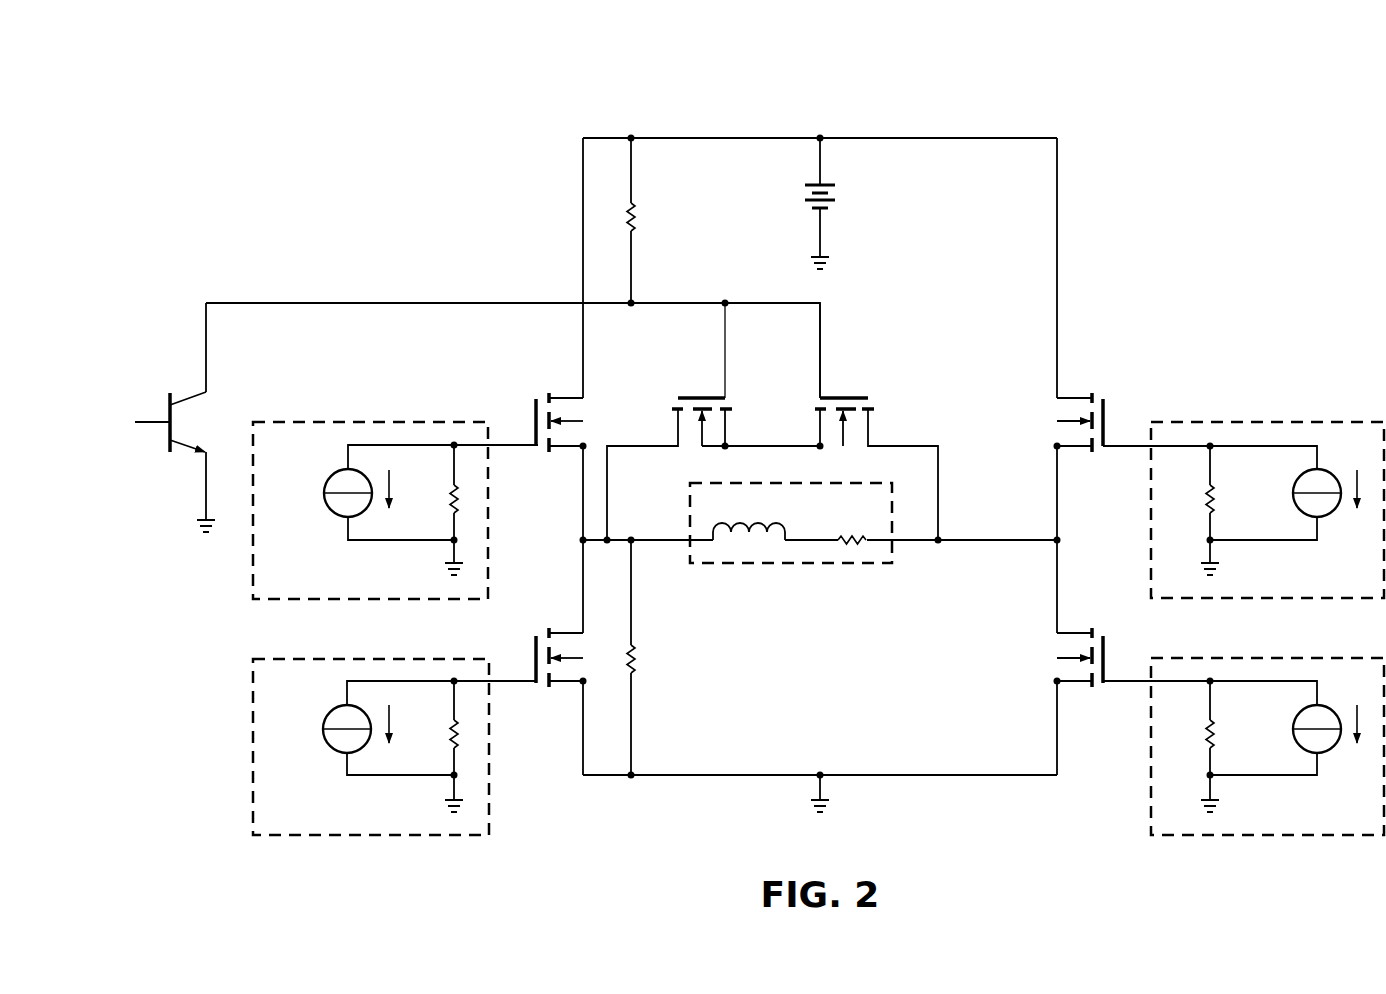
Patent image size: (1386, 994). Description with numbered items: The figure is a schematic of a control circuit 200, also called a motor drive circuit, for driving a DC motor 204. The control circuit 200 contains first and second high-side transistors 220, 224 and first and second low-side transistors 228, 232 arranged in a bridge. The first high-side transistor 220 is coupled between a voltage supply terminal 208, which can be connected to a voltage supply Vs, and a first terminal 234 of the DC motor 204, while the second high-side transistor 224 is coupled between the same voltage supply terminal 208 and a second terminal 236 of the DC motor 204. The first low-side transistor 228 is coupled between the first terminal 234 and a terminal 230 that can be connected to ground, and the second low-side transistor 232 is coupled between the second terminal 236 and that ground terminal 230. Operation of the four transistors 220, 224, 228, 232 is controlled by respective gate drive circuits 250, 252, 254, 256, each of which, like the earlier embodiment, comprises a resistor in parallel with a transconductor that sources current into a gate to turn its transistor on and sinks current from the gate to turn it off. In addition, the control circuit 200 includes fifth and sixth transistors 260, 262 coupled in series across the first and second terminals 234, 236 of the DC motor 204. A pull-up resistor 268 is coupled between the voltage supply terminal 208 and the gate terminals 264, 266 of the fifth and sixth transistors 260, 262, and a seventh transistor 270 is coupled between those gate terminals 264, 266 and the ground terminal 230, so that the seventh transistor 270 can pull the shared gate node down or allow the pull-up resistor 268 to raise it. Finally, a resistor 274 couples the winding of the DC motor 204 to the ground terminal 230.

The control circuit 200 is at (436, 100).
The DC motor 204 is at (820, 558).
The voltage supply terminal 208 is at (826, 133).
The first high-side transistor 220 is at (531, 407).
The second high-side transistor 224 is at (1108, 407).
The first low-side transistor 228 is at (531, 644).
The ground terminal 230 is at (824, 770).
The second low-side transistor 232 is at (1108, 644).
The first terminal of the DC motor 234 is at (681, 542).
The second terminal of the DC motor 236 is at (902, 542).
The gate drive circuit 250 is at (341, 418).
The gate drive circuit 252 is at (1299, 418).
The gate drive circuit 254 is at (341, 841).
The gate drive circuit 256 is at (1299, 841).
The fifth transistor 260 is at (712, 435).
The sixth transistor 262 is at (844, 423).
The gate terminal of the fifth transistor 264 is at (727, 389).
The gate terminal of the sixth transistor 266 is at (819, 389).
The pull-up resistor 268 is at (636, 217).
The seventh transistor 270 is at (166, 417).
The resistor 274 is at (639, 660).